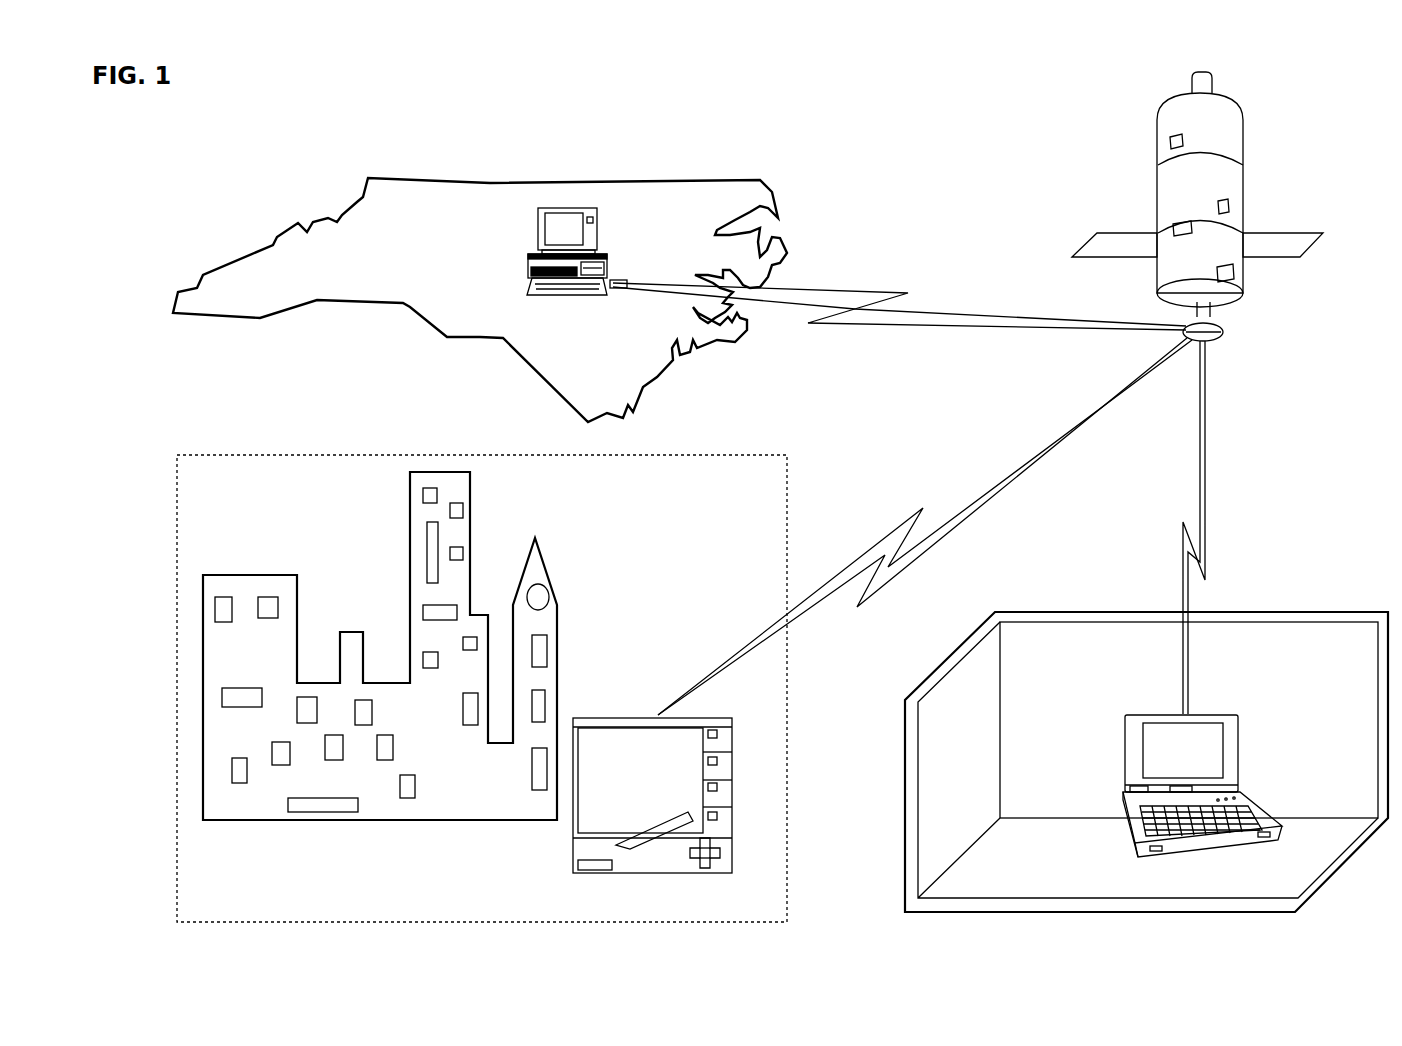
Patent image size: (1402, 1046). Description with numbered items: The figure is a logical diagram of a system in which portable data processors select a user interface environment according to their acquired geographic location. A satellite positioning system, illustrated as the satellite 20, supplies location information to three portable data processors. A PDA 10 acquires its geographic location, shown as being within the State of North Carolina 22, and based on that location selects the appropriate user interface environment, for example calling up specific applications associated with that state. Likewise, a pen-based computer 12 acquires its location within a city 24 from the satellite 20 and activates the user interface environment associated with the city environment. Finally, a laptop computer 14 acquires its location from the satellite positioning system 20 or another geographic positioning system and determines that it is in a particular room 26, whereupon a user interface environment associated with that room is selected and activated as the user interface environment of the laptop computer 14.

The PDA 10 is at (552, 233).
The pen-based computer 12 is at (682, 767).
The laptop computer 14 is at (1187, 747).
The satellite 20 is at (1177, 113).
The State of North Carolina 22 is at (438, 263).
The city 24 is at (174, 592).
The room 26 is at (1055, 643).